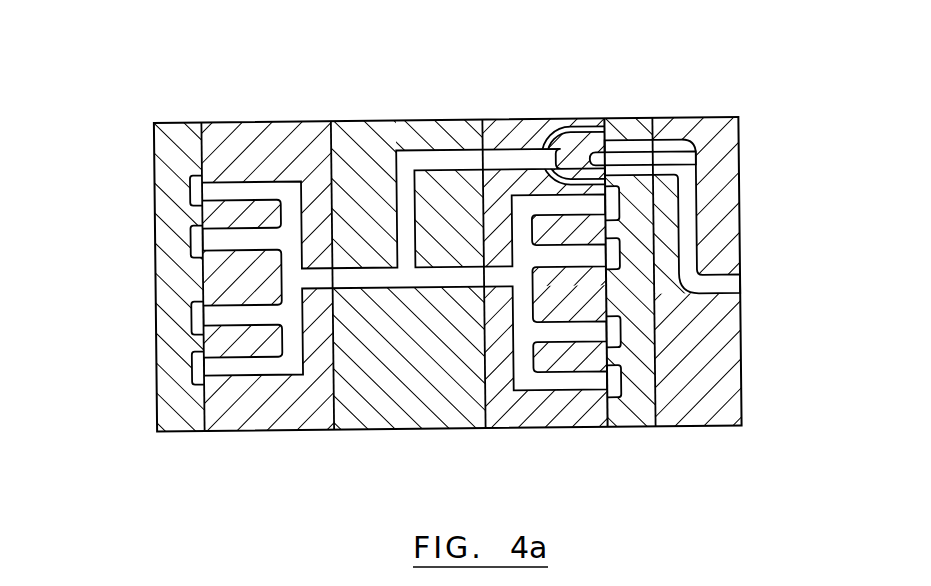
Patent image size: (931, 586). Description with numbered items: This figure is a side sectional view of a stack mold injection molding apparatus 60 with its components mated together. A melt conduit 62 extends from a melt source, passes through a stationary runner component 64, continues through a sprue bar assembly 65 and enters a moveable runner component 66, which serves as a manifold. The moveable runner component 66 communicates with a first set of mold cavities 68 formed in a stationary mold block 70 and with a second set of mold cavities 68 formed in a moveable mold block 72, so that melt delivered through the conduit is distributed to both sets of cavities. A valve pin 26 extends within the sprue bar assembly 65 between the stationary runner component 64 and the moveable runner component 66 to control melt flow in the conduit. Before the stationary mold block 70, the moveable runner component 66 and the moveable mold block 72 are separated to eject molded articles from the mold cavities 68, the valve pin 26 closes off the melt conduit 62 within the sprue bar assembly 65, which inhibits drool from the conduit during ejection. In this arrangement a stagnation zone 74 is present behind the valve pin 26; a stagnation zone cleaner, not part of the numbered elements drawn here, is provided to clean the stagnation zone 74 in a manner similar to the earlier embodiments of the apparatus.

The stack mold injection molding apparatus 60 is at (140, 90).
The moveable mold block 72 is at (170, 122).
The melt conduit 62 is at (395, 122).
The moveable runner component 66 is at (437, 110).
The sprue bar assembly 65 is at (563, 133).
The valve pin 26 is at (620, 152).
The stationary runner component 64 is at (676, 118).
The stagnation zone 74 is at (738, 118).
The mold cavities 68 is at (193, 334).
The stationary mold block 70 is at (620, 427).